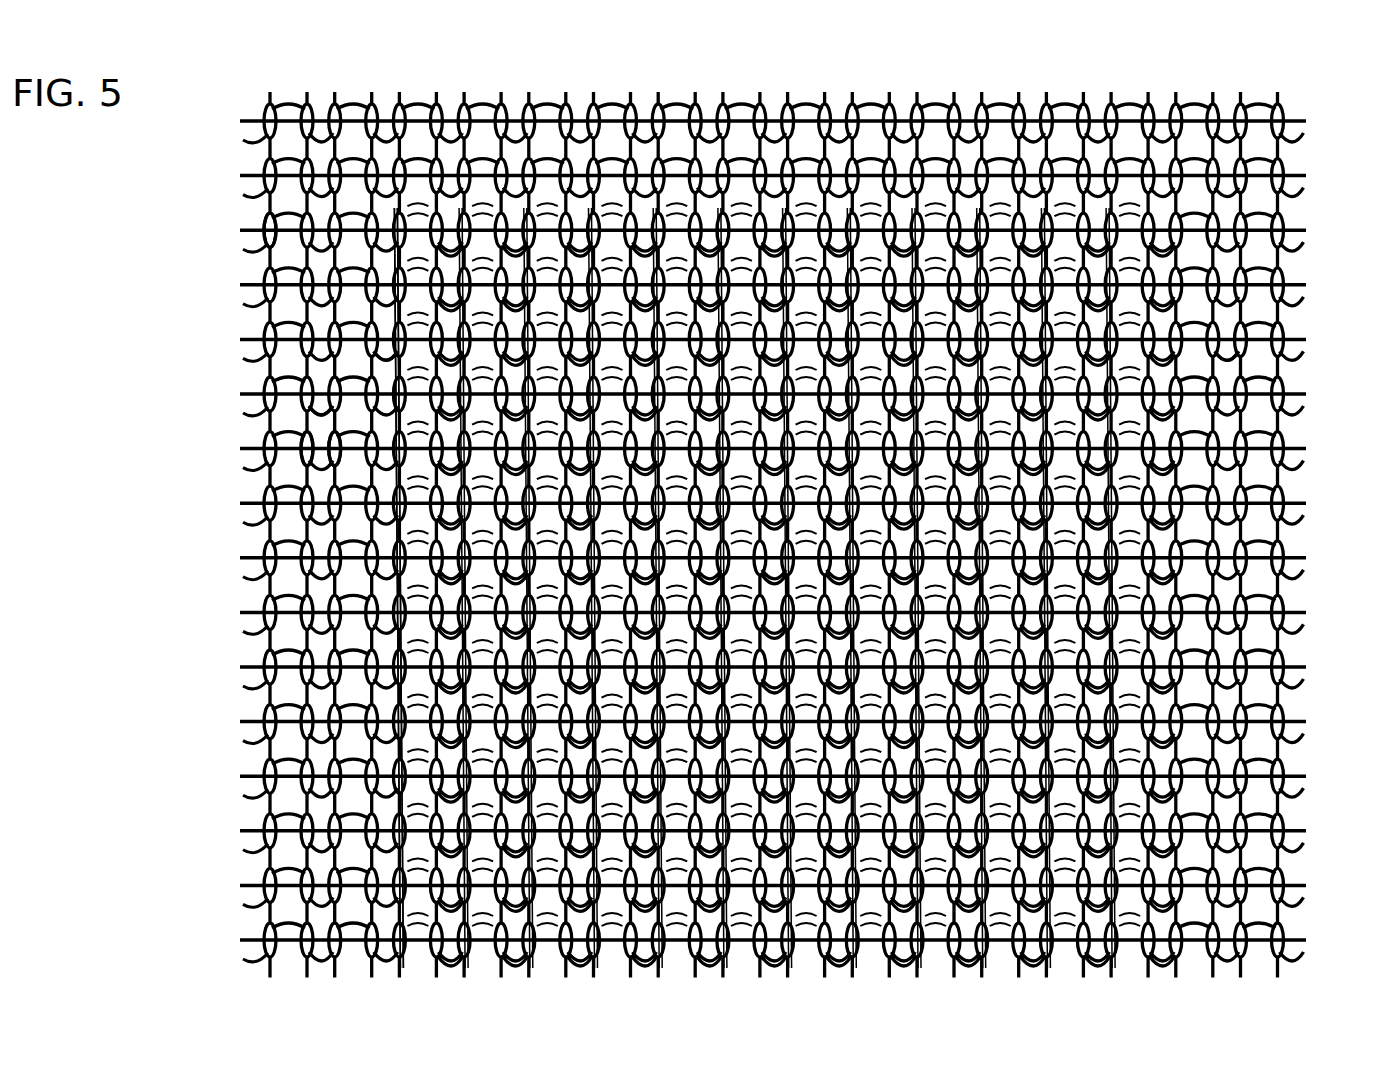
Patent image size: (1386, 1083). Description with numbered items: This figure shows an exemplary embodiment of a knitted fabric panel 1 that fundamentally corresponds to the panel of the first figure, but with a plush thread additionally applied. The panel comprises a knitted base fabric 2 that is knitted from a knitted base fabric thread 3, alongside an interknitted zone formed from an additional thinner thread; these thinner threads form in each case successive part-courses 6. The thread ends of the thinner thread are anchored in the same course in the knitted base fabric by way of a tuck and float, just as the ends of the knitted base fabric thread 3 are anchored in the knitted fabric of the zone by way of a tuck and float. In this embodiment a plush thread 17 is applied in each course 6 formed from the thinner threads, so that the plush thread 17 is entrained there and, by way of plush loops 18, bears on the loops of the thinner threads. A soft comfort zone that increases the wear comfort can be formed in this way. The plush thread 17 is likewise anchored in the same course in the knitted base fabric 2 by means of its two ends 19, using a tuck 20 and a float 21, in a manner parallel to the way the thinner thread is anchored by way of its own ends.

The knitted fabric panel 1 is at (758, 535).
The knitted base fabric 2 is at (230, 200).
The knitted base fabric thread 3 is at (258, 249).
The part-courses 6 is at (1322, 862).
The plush thread 17 is at (410, 378).
The plush loops 18 is at (400, 365).
The ends of the plush thread 19 is at (1245, 352).
The tuck 20 is at (325, 460).
The float 21 is at (295, 462).